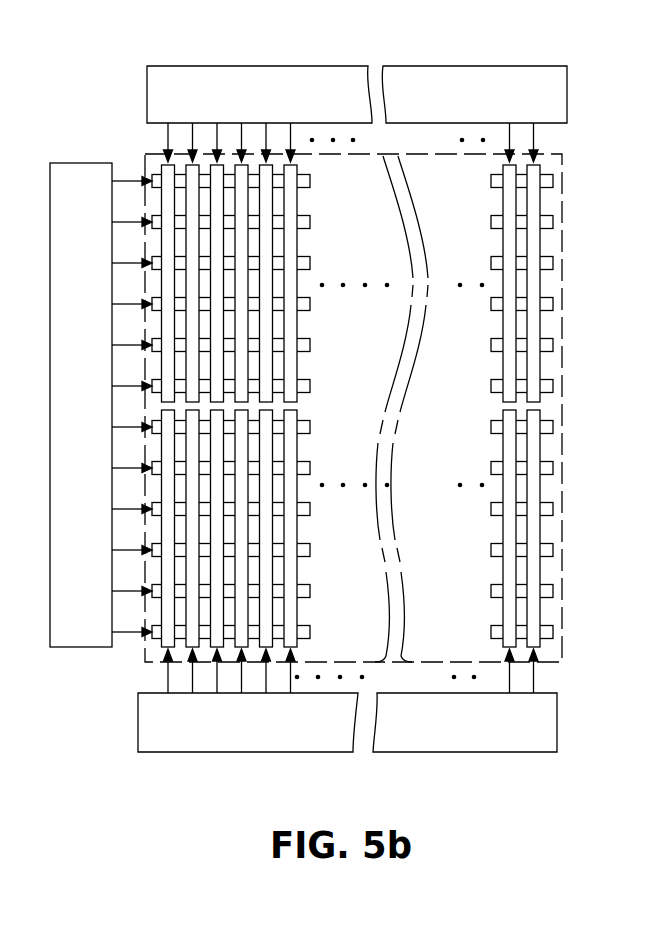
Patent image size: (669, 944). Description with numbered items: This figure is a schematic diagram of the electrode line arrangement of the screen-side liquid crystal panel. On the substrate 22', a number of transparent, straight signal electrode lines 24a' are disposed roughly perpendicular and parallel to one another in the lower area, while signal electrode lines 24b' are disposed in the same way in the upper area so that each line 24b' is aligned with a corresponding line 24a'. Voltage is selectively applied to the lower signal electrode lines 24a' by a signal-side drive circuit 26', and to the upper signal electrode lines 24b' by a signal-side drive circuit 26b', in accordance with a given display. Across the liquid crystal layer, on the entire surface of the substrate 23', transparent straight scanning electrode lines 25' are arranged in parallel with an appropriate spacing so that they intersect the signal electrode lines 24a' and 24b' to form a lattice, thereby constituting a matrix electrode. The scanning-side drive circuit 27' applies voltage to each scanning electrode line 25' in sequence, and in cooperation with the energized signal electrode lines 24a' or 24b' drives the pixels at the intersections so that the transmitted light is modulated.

The substrate 22' is at (407, 408).
The substrate 23' is at (353, 408).
The signal electrode lines 24a' is at (390, 528).
The signal electrode lines 24b' is at (351, 283).
The scanning electrode lines 25' is at (352, 407).
The lower signal-side drive circuit 26' is at (347, 725).
The signal-side drive circuit 26b' is at (357, 96).
The scanning-side drive circuit 27' is at (99, 427).